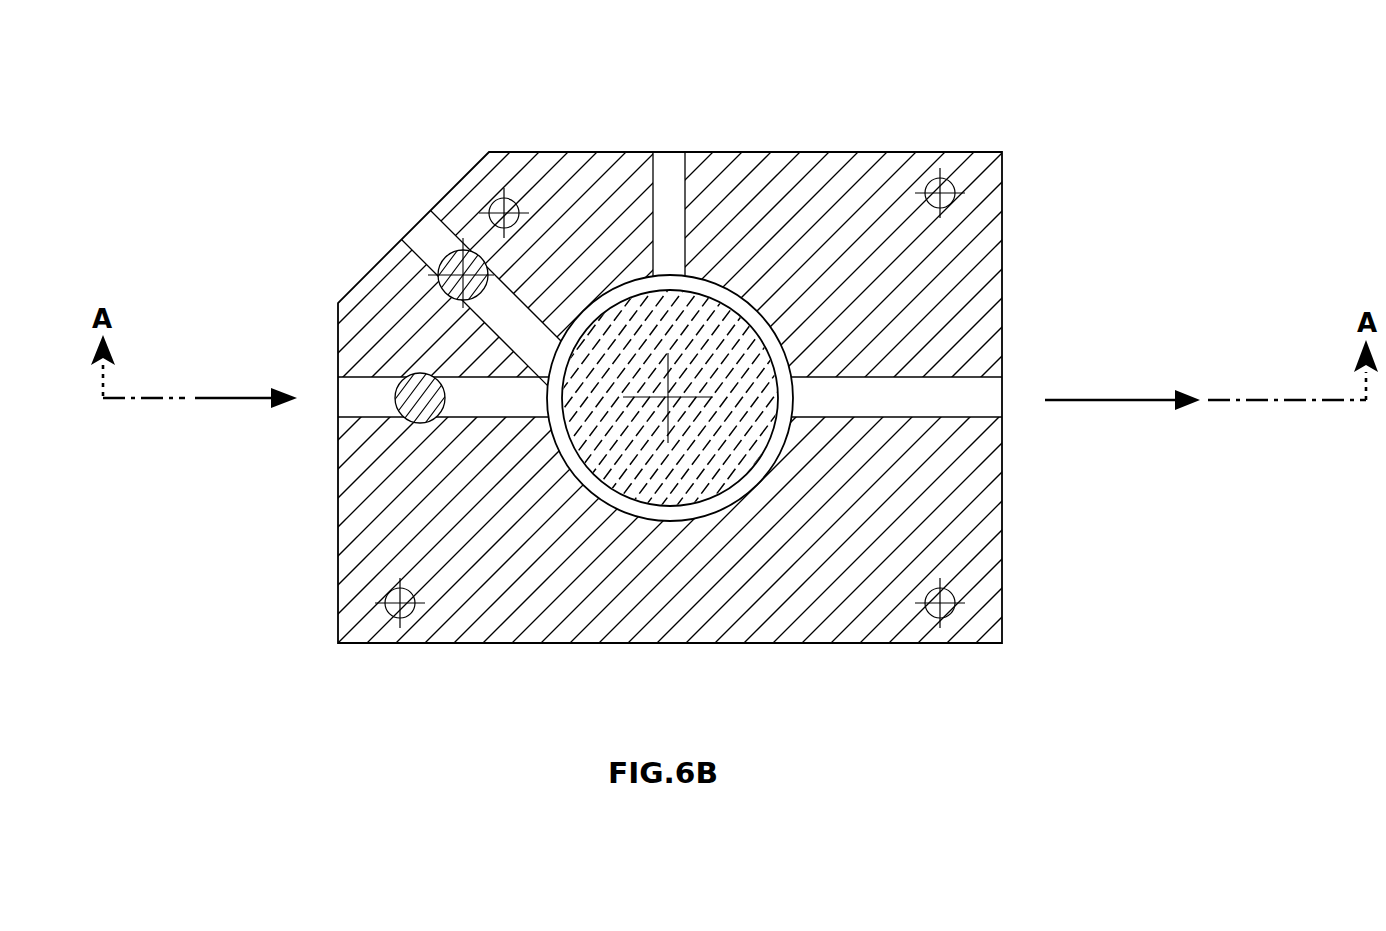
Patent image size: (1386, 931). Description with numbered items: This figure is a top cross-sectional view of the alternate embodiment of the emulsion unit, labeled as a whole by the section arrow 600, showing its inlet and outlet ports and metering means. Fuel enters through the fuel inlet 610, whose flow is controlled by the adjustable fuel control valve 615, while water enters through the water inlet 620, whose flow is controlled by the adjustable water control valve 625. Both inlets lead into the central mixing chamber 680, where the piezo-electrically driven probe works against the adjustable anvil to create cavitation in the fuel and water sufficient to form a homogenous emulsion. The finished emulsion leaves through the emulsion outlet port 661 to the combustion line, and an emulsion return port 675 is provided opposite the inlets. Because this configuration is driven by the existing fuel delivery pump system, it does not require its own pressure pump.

The manifold block assembly 600 is at (693, 506).
The fuel inlet 610 is at (362, 395).
The fuel control valve 615 is at (440, 262).
The water inlet 620 is at (429, 237).
The water control valve 625 is at (398, 407).
The emulsion outlet 661 is at (980, 395).
The emulsion return 675 is at (666, 169).
The mixing chamber 680 is at (779, 358).